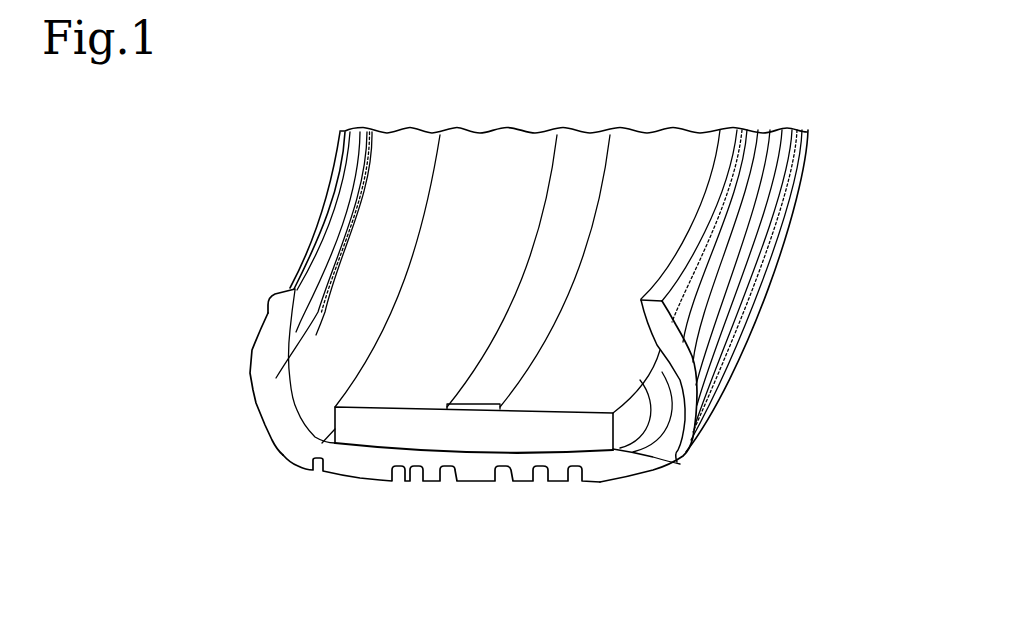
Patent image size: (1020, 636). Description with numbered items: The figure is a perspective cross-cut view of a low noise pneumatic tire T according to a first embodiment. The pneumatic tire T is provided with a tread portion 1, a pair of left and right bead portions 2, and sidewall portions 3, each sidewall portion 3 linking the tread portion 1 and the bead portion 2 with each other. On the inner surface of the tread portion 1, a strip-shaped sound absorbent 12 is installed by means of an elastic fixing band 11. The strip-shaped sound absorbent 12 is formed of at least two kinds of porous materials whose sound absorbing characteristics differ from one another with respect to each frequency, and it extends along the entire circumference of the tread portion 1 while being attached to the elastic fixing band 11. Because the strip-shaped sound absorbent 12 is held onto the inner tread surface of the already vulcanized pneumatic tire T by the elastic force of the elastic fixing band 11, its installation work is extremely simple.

The pneumatic tire T is at (303, 181).
The tread portion 1 is at (380, 470).
The bead portion 2 is at (278, 313).
The sidewall portion 3 is at (262, 407).
The elastic fixing band 11 is at (583, 192).
The strip-shaped sound absorbent 12 is at (562, 430).